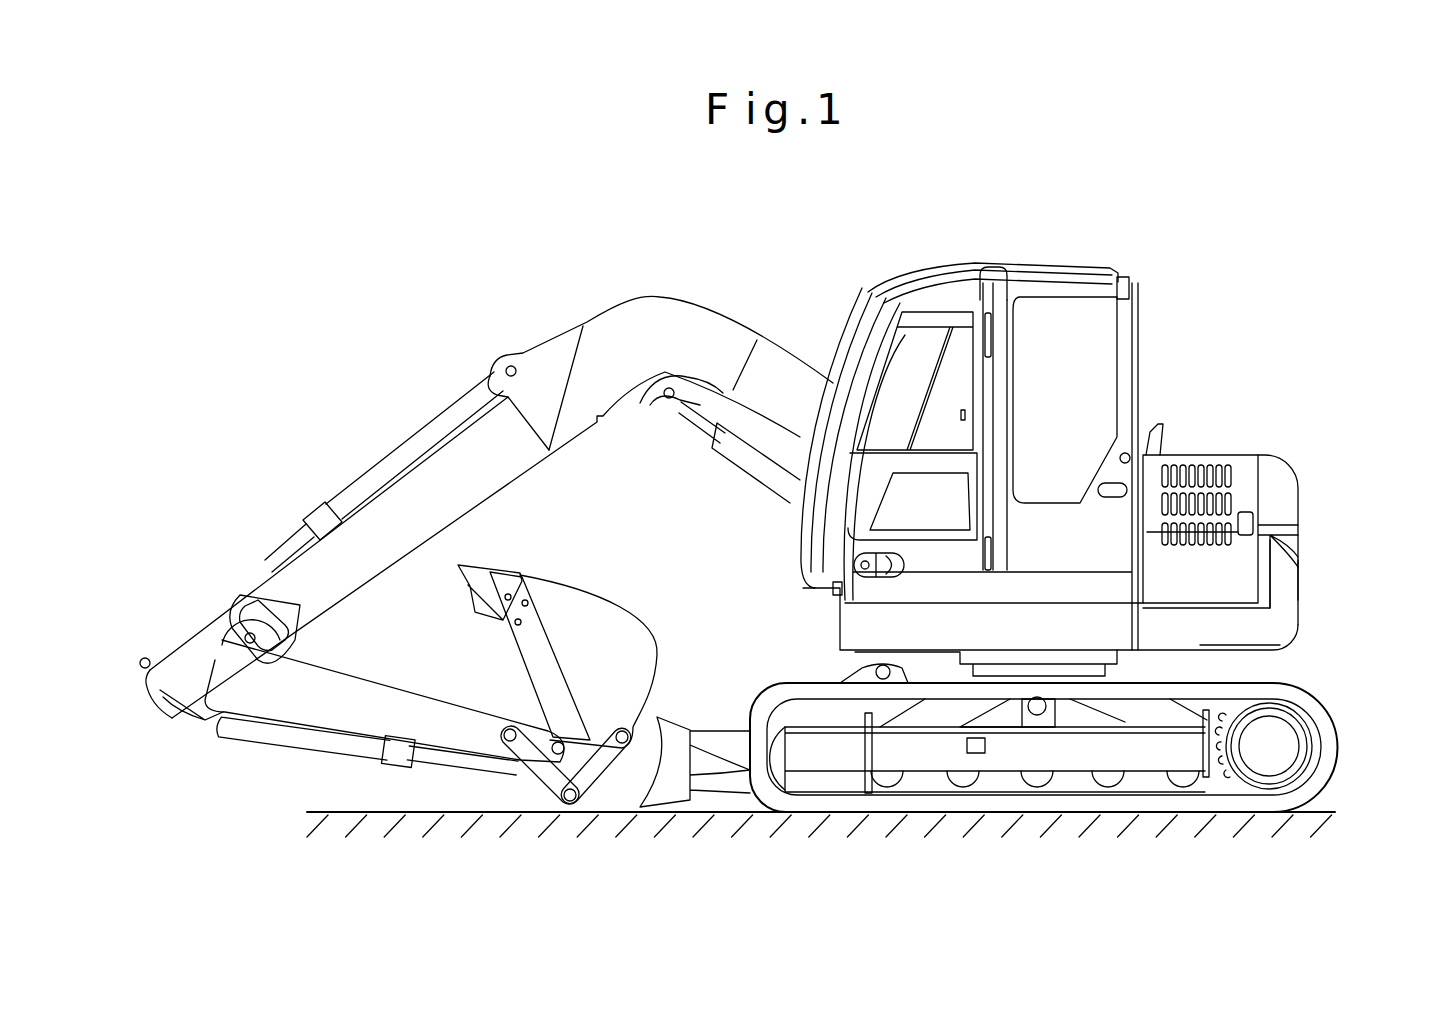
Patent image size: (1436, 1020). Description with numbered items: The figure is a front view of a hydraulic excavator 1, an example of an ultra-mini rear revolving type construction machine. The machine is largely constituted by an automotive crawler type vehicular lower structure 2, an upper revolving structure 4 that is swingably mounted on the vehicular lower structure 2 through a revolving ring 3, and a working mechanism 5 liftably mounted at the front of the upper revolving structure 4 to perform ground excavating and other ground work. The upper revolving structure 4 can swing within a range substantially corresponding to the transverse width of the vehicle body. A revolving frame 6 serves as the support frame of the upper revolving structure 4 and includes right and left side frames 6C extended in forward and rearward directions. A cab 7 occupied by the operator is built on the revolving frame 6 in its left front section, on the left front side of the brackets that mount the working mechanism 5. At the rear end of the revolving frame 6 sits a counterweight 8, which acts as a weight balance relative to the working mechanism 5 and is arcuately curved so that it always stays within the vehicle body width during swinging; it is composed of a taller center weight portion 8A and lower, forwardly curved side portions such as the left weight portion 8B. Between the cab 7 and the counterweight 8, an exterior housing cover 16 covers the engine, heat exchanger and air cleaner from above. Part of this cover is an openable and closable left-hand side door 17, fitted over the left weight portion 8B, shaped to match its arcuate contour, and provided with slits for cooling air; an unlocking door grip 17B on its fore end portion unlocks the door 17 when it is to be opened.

The hydraulic excavator 1 is at (826, 305).
The vehicular lower structure 2 is at (997, 758).
The revolving ring 3 is at (855, 651).
The upper revolving structure 4 is at (1179, 333).
The working mechanism 5 is at (645, 323).
The revolving frame 6 is at (855, 617).
The side frames 6C is at (925, 612).
The cab 7 is at (993, 275).
The counterweight 8 is at (1285, 627).
The center weight portion 8A is at (1290, 588).
The left weight portion 8B is at (1197, 640).
The exterior housing cover 16 is at (1280, 467).
The left-hand side door 17 is at (1242, 463).
The unlocking door grip 17B is at (1253, 523).